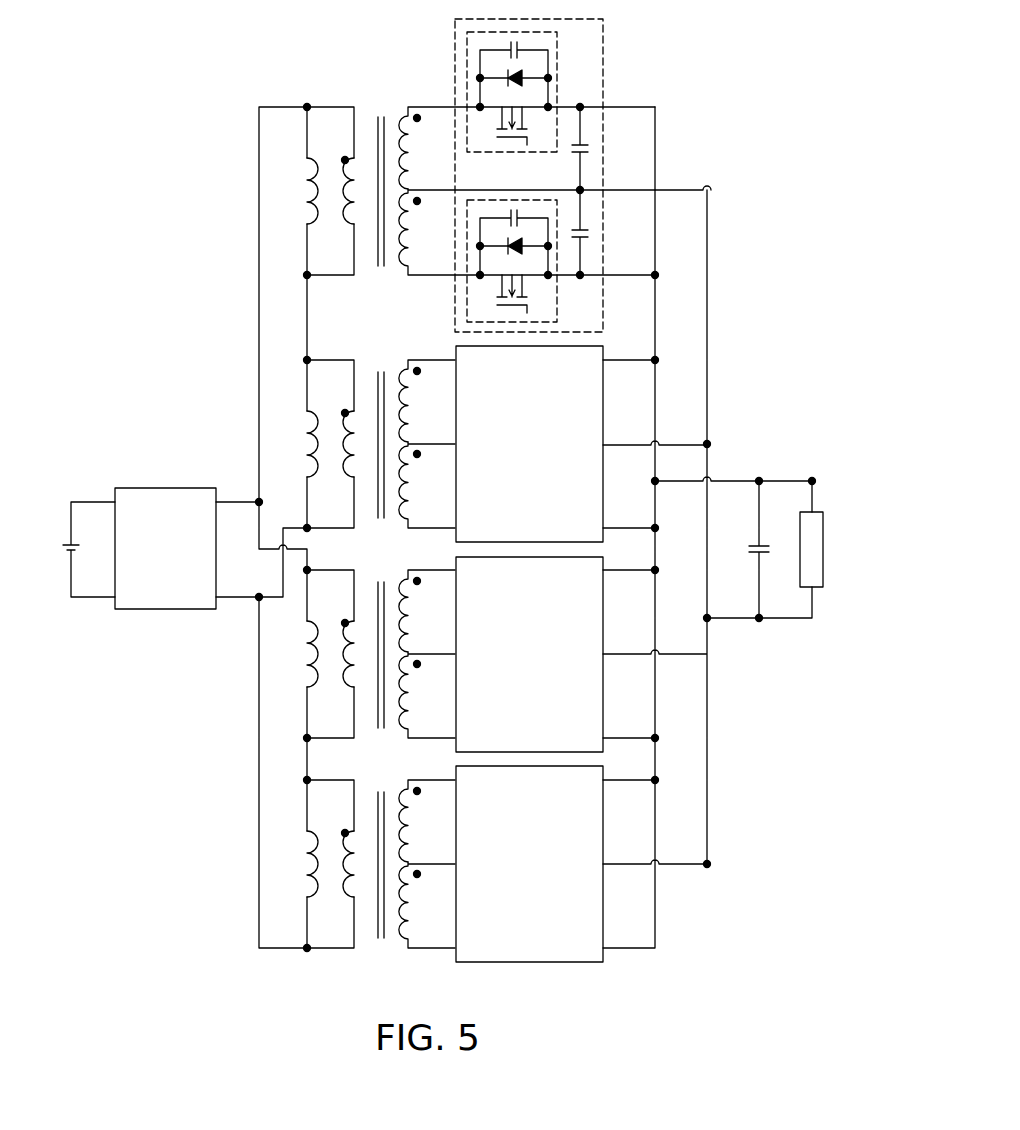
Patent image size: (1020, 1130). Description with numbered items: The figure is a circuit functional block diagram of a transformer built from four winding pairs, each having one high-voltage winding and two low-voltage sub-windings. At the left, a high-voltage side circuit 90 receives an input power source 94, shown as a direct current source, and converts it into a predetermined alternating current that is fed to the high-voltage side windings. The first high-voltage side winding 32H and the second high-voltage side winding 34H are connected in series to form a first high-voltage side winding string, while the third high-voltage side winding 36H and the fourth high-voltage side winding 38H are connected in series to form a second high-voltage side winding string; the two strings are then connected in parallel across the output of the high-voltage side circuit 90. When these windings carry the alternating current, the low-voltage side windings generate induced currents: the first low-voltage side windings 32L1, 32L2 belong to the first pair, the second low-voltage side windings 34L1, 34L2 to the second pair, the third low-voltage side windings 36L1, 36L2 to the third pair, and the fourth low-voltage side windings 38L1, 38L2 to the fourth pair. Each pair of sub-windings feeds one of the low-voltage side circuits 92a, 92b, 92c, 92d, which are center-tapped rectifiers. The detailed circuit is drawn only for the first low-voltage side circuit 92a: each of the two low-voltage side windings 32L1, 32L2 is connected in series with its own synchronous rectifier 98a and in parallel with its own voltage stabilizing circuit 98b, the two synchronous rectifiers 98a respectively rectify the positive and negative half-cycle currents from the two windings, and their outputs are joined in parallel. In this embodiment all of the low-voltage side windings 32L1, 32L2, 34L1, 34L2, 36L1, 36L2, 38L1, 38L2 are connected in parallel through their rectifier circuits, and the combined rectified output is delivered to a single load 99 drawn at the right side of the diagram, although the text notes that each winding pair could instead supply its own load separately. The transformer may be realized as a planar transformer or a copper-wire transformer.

The high-voltage side circuit 90 is at (180, 560).
The input power source 94 is at (70, 540).
The load 99 is at (823, 548).
The first high-voltage side winding 32H is at (357, 190).
The first low-voltage side winding 32L1 is at (397, 135).
The first low-voltage side winding 32L2 is at (397, 250).
The second high-voltage side winding 34H is at (360, 436).
The second low-voltage side winding 34L1 is at (397, 392).
The second low-voltage side winding 34L2 is at (397, 500).
The third high-voltage side winding 36H is at (357, 662).
The third low-voltage side winding 36L1 is at (395, 603).
The third low-voltage side winding 36L2 is at (395, 711).
The fourth high-voltage side winding 38H is at (360, 856).
The fourth low-voltage side winding 38L1 is at (397, 812).
The fourth low-voltage side winding 38L2 is at (395, 920).
The first low-voltage side circuit 92a is at (617, 175).
The second low-voltage side circuit 92b is at (552, 457).
The third low-voltage side circuit 92c is at (552, 667).
The fourth low-voltage side circuit 92d is at (552, 877).
The synchronous rectifier 98a is at (557, 62).
The voltage stabilizing circuit 98b is at (586, 150).